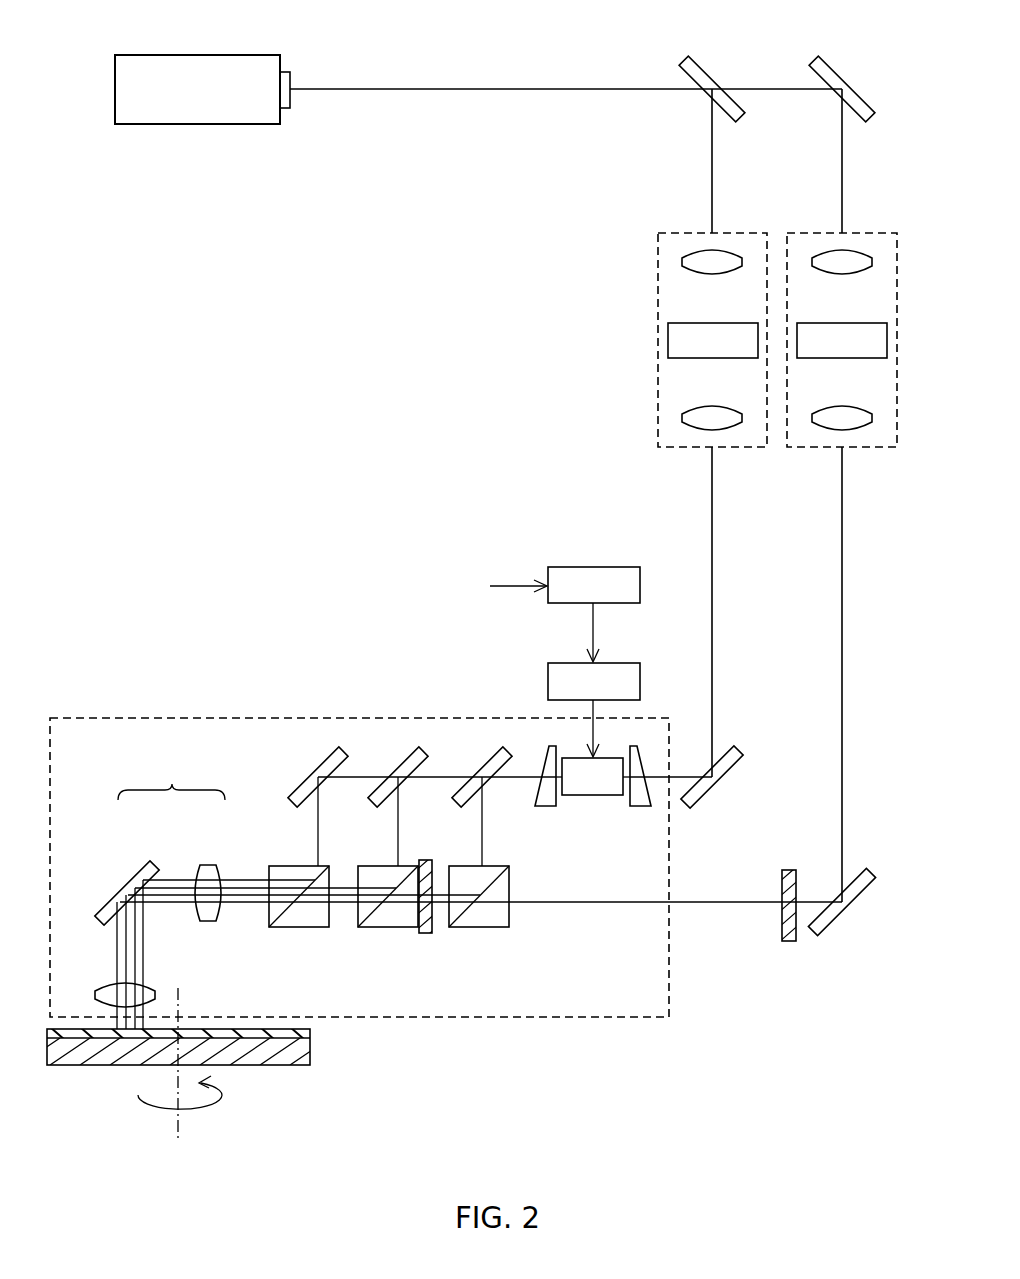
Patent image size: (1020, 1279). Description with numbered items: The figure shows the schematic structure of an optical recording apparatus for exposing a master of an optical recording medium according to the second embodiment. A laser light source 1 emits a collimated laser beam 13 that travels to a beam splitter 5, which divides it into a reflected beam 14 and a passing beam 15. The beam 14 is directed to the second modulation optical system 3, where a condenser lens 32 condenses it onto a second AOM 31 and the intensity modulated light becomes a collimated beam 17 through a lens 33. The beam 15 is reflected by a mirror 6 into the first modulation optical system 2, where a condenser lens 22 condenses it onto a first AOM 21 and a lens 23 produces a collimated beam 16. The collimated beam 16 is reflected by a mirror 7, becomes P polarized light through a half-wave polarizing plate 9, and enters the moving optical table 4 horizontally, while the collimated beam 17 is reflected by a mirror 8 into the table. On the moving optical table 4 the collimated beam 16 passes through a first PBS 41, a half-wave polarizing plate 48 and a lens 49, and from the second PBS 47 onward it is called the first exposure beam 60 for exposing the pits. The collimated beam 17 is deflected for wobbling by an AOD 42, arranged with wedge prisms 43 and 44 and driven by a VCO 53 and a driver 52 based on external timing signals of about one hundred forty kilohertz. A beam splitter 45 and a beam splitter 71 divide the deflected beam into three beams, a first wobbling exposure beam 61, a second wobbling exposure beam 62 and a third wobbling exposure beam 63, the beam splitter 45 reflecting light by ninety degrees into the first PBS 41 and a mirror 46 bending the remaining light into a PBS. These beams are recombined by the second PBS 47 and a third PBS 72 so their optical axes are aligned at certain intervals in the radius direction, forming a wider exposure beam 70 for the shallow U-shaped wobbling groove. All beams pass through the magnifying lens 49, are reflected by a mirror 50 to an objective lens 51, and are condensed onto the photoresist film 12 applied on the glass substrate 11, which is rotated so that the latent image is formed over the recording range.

The laser light source 1 is at (264, 53).
The first modulation optical system 2 is at (802, 231).
The second modulation optical system 3 is at (672, 231).
The moving optical table 4 is at (158, 716).
The beam splitter 5 is at (708, 64).
The mirror 6 is at (840, 64).
The mirror 7 is at (836, 934).
The mirror 8 is at (706, 800).
The λ/2 polarizing plate 9 is at (789, 943).
The glass substrate 11 is at (308, 1050).
The photoresist film 12 is at (312, 1032).
The laser beam 13 is at (445, 87).
The beam 14 is at (711, 137).
The beam 15 is at (781, 87).
The collimated beam 16 is at (841, 477).
The collimated beam 17 is at (711, 477).
The first AOM 21 is at (875, 322).
The condenser lens 22 is at (824, 274).
The lens 23 is at (827, 407).
The second AOM 31 is at (745, 322).
The condenser lens 32 is at (692, 274).
The lens 33 is at (695, 407).
The first PBS 41 is at (477, 929).
The AOD 42 is at (592, 797).
The wedge prism 43 is at (638, 808).
The wedge prism 44 is at (546, 808).
The beam splitter 45 is at (483, 750).
The mirror 46 is at (322, 750).
The second PBS 47 is at (377, 929).
The λ/2 polarizing plate 48 is at (425, 935).
The lens 49 is at (208, 923).
The mirror 50 is at (130, 876).
The objective lens 51 is at (108, 984).
The driver 52 is at (622, 662).
The VCO 53 is at (622, 566).
The first exposure beam 60 is at (170, 906).
The 2-1 exposure beam 61 is at (481, 826).
The 2-2 exposure beam 62 is at (397, 826).
The 2-3 exposure beam 63 is at (317, 826).
The exposure beam 70 is at (171, 778).
The beam splitter 71 is at (403, 750).
The third PBS 72 is at (297, 929).